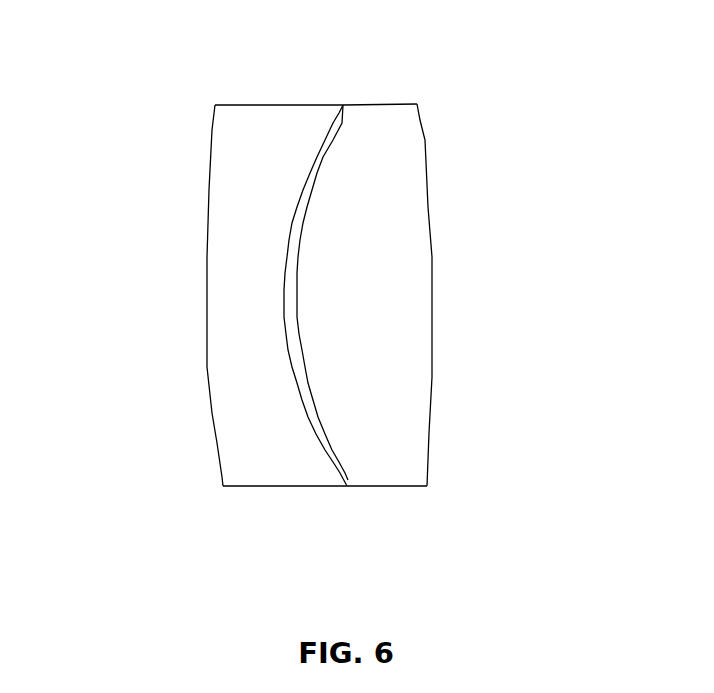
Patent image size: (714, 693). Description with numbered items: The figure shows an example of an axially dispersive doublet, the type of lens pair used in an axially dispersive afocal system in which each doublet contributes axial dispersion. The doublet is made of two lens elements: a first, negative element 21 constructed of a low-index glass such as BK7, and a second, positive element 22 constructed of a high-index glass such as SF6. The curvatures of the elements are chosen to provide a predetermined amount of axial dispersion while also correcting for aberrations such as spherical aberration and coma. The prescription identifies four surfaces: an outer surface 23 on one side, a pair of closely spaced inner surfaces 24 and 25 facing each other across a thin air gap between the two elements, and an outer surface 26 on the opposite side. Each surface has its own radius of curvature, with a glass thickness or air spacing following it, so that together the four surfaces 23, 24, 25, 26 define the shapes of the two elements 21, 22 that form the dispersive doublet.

The first, negative element 21 is at (281, 295).
The second, positive element 22 is at (385, 295).
The first surface 23 is at (204, 424).
The second surface 24 is at (310, 441).
The third surface 25 is at (305, 278).
The fourth surface 26 is at (439, 425).